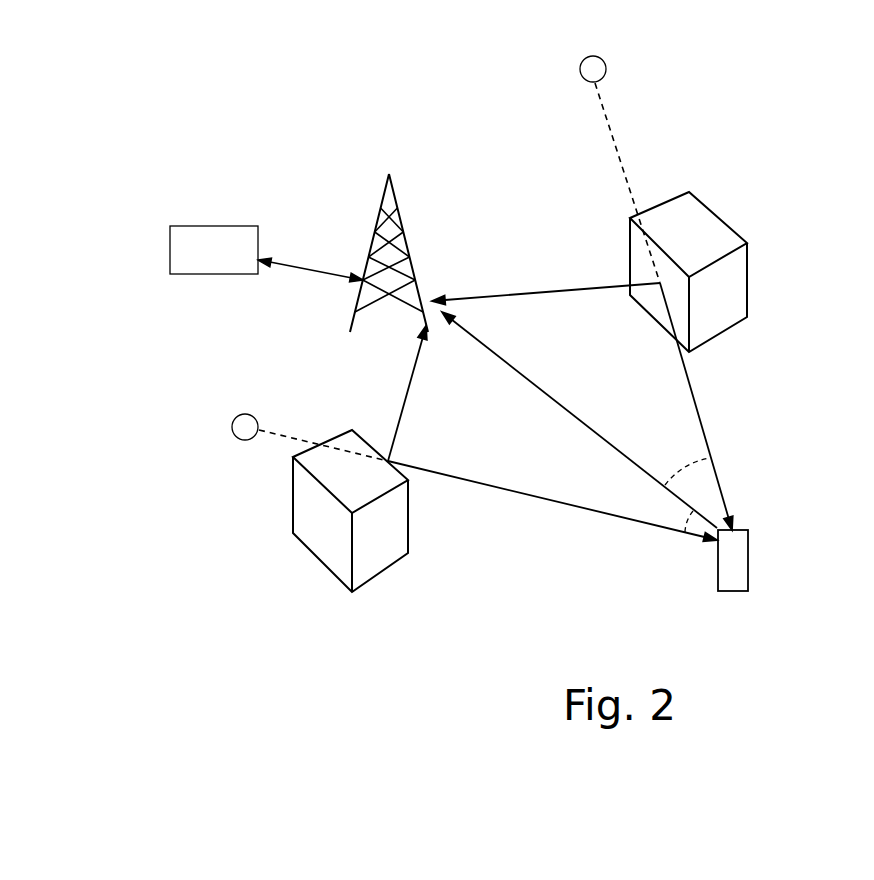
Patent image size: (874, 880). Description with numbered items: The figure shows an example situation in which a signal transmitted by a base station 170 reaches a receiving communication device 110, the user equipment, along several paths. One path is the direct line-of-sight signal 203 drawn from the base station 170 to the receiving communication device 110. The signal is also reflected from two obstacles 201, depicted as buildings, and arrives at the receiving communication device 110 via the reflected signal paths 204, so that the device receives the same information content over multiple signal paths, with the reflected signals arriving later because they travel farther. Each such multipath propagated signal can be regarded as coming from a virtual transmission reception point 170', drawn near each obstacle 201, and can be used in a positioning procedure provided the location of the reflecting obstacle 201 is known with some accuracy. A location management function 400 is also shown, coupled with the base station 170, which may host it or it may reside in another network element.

The location management function 400 is at (170, 250).
The base station 170 is at (369, 231).
The virtual transmission reception point 170' is at (406, 259).
The obstacle 201 is at (725, 219).
The line-of-sight signal 203 is at (552, 398).
The reflected signal 204 is at (703, 425).
The receiving communication device 110 is at (748, 559).